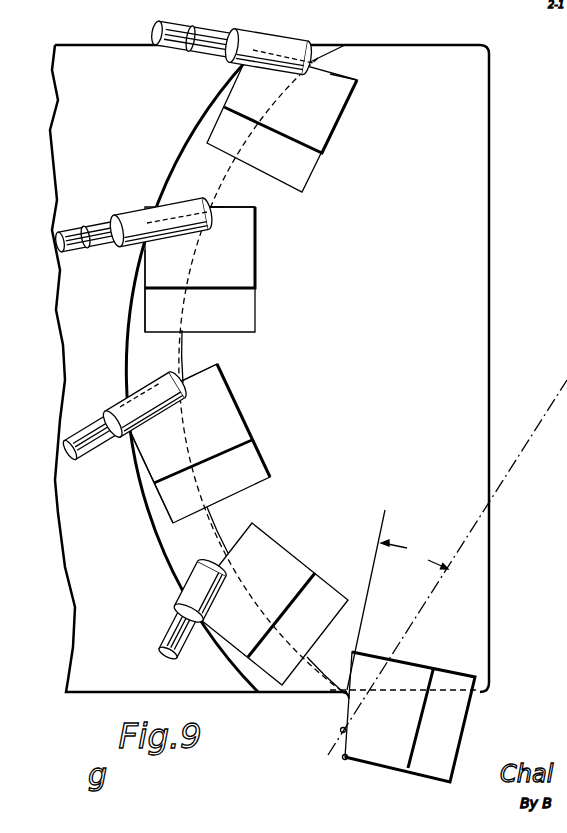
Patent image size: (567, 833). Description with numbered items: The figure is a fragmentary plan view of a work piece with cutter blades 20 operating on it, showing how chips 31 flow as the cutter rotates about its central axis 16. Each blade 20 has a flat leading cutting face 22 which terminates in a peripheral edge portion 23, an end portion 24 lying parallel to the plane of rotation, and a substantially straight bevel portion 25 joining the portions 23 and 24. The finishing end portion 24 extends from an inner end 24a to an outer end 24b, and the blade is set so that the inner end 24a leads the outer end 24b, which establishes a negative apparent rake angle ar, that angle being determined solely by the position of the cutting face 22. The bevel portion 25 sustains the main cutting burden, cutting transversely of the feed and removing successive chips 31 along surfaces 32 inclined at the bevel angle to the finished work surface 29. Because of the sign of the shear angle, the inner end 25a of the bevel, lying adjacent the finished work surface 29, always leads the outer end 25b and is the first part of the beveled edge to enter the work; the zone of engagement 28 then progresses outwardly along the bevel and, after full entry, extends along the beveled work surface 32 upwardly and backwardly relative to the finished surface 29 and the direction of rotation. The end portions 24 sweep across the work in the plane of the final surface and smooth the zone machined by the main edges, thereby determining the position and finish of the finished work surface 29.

The central axis 16 is at (557, 378).
The cutter blade 20 is at (331, 128).
The cutting face 22 is at (336, 113).
The peripheral edge portion 23 is at (140, 278).
The end portion 24 is at (352, 79).
The inner end of finishing edge portion 24a is at (218, 202).
The outer end of finishing edge portion 24b is at (258, 208).
The bevel portion 25 is at (341, 731).
The inner end of bevel edge portion 25a is at (322, 698).
The outer end of bevel edge portion 25b is at (342, 757).
The zone of engagement 28 is at (167, 393).
The finished work surface 29 is at (442, 60).
The chip 31 is at (272, 42).
The beveled work surface 32 is at (194, 152).
The apparent rake angle ar is at (414, 554).